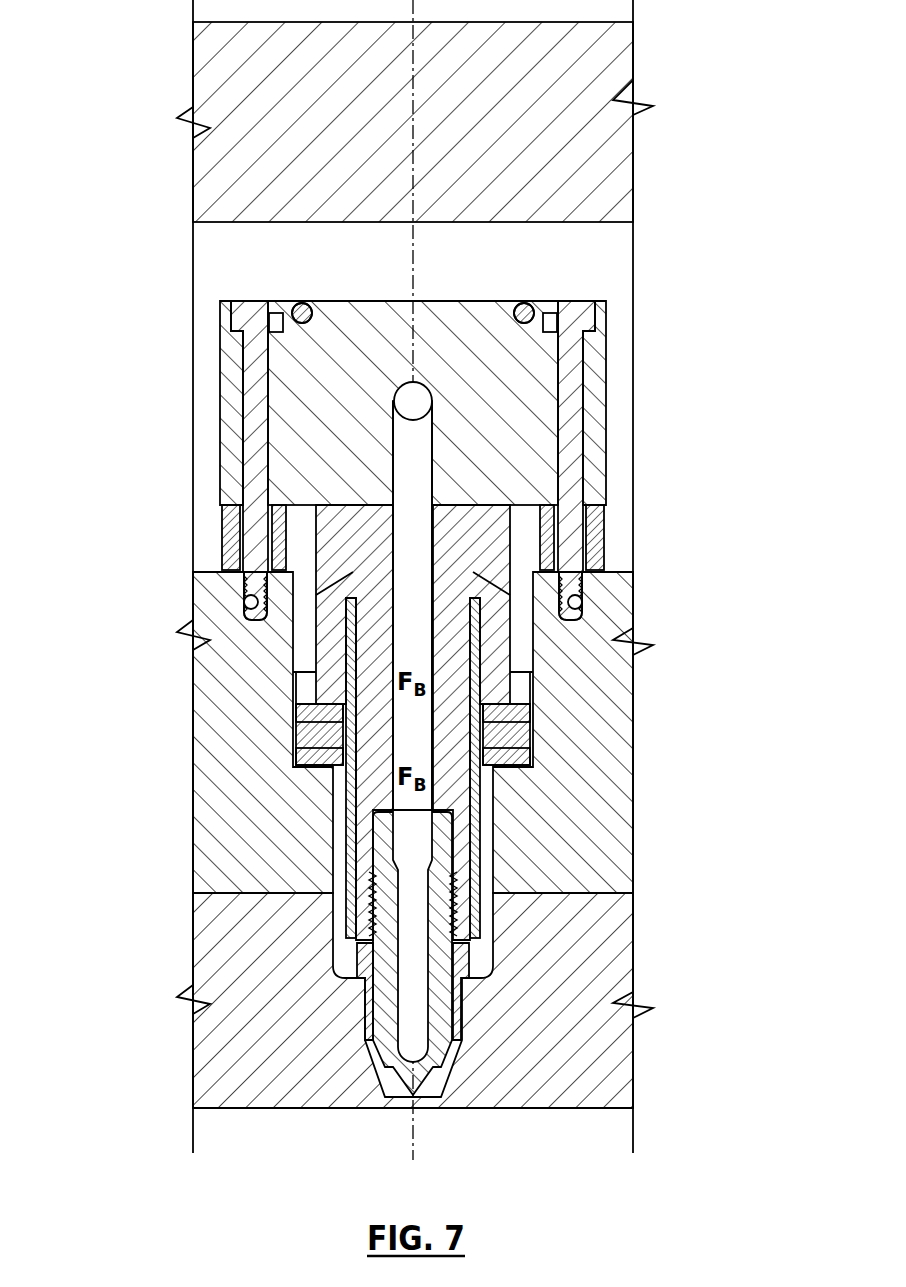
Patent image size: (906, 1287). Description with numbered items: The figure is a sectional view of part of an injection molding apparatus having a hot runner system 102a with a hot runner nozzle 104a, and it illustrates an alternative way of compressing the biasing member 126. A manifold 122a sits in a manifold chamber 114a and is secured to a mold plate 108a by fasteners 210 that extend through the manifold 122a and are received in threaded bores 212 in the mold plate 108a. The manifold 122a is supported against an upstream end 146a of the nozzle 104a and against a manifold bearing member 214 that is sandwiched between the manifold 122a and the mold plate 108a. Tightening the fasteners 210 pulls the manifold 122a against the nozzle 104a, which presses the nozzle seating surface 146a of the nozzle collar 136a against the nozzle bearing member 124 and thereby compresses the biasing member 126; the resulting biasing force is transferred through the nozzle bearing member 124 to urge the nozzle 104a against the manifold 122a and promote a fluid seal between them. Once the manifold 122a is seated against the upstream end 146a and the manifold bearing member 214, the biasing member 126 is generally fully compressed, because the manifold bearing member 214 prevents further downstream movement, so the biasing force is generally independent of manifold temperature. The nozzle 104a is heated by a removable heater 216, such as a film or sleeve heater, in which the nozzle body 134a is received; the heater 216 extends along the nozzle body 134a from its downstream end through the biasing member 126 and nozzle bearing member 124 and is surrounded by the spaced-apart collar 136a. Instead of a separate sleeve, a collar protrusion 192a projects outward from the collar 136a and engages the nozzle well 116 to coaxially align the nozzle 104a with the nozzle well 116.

The hot runner system 102a is at (190, 537).
The hot runner nozzle 104a is at (318, 820).
The mold plate 108a is at (217, 834).
The manifold chamber 114a is at (203, 328).
The nozzle well 116 is at (483, 863).
The manifold 122a is at (222, 392).
The nozzle bearing member 124 is at (530, 708).
The biasing member 126 is at (532, 737).
The nozzle body 134a is at (478, 787).
The nozzle collar 136a is at (505, 643).
The upstream end 146a is at (297, 713).
The collar protrusion 192a is at (532, 683).
The fasteners 210 is at (575, 380).
The threaded bores 212 is at (578, 602).
The manifold bearing member 214 is at (600, 530).
The removable heater 216 is at (343, 884).